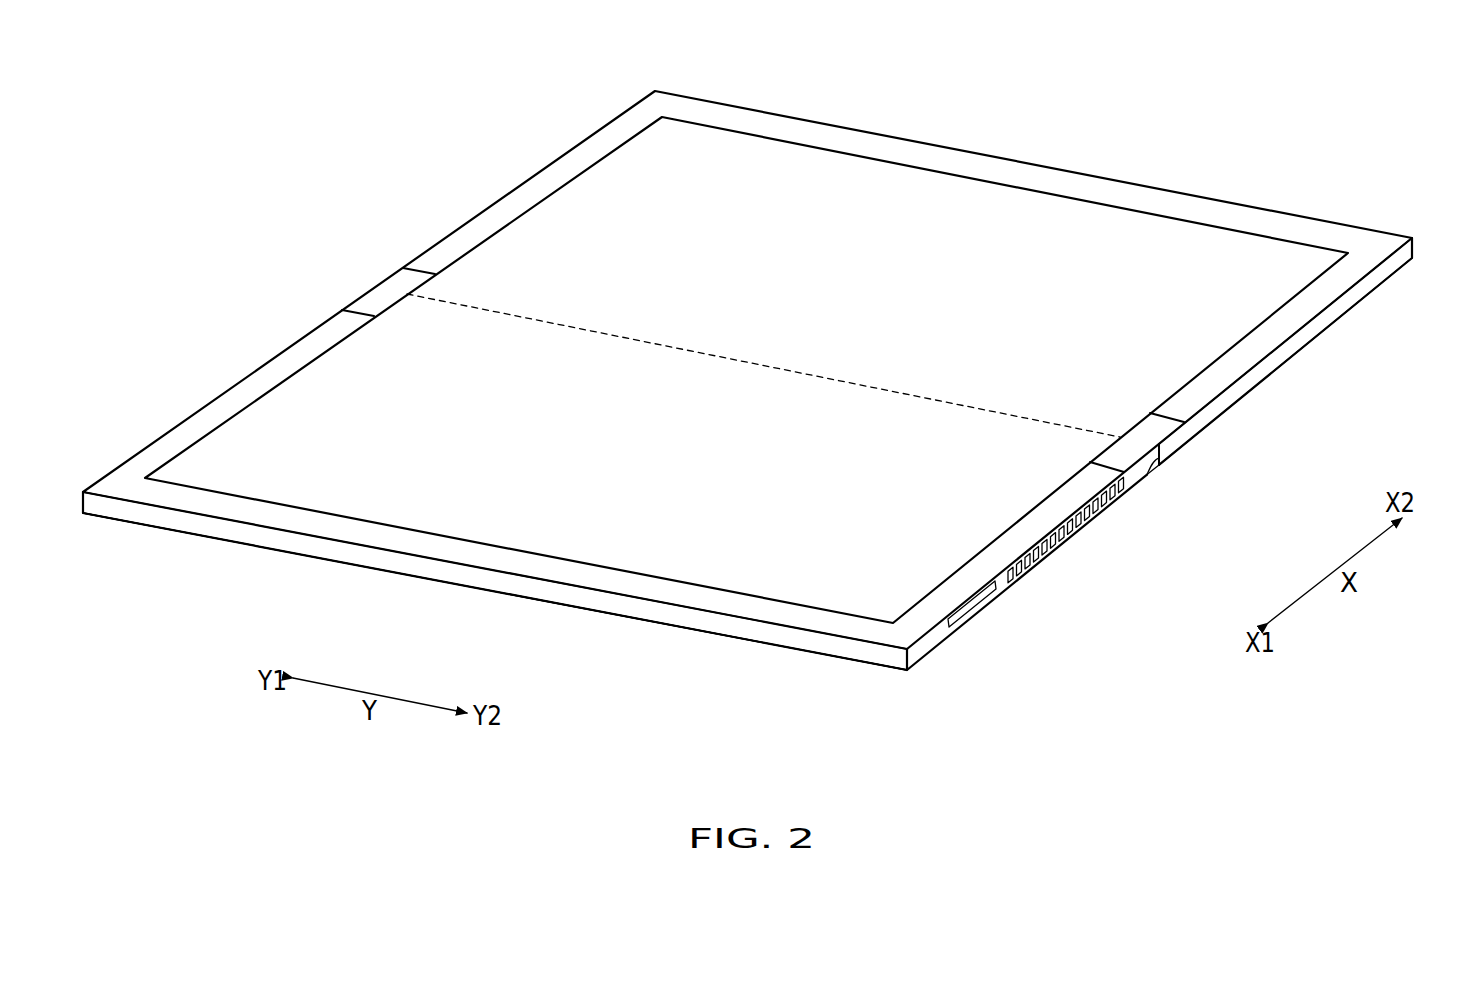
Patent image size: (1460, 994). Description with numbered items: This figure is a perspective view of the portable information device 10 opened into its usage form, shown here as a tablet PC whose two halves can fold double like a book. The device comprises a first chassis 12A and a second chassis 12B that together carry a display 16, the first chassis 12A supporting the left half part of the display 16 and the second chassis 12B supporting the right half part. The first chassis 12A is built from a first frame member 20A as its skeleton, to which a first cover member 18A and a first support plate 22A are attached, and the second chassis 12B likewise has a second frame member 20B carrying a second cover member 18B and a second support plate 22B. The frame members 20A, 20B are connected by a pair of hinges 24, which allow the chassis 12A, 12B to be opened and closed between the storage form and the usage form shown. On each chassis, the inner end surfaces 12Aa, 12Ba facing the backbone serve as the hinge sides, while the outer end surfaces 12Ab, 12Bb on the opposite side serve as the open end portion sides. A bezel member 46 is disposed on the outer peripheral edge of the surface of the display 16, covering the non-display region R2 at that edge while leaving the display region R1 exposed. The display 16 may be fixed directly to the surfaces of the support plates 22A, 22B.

The portable information device 10 is at (219, 108).
The first chassis 12A is at (235, 380).
The second chassis 12B is at (526, 181).
The inner end surface of the first chassis 12Aa is at (1177, 453).
The outer end surface of the first chassis 12Ab is at (618, 615).
The inner end surface of the second chassis 12Ba is at (1158, 452).
The outer end surface of the second chassis 12Bb is at (1417, 248).
The display 16 is at (810, 170).
The first cover member 18A is at (868, 658).
The second cover member 18B is at (1332, 315).
The first frame member 20A is at (632, 501).
The first support plate 22A is at (797, 576).
The second frame member 20B is at (877, 254).
The second support plate 22B is at (920, 203).
The hinge 24 is at (380, 290).
The bezel member 46 is at (975, 585).
The display region R1 is at (390, 513).
The non-display region R2 is at (1030, 173).